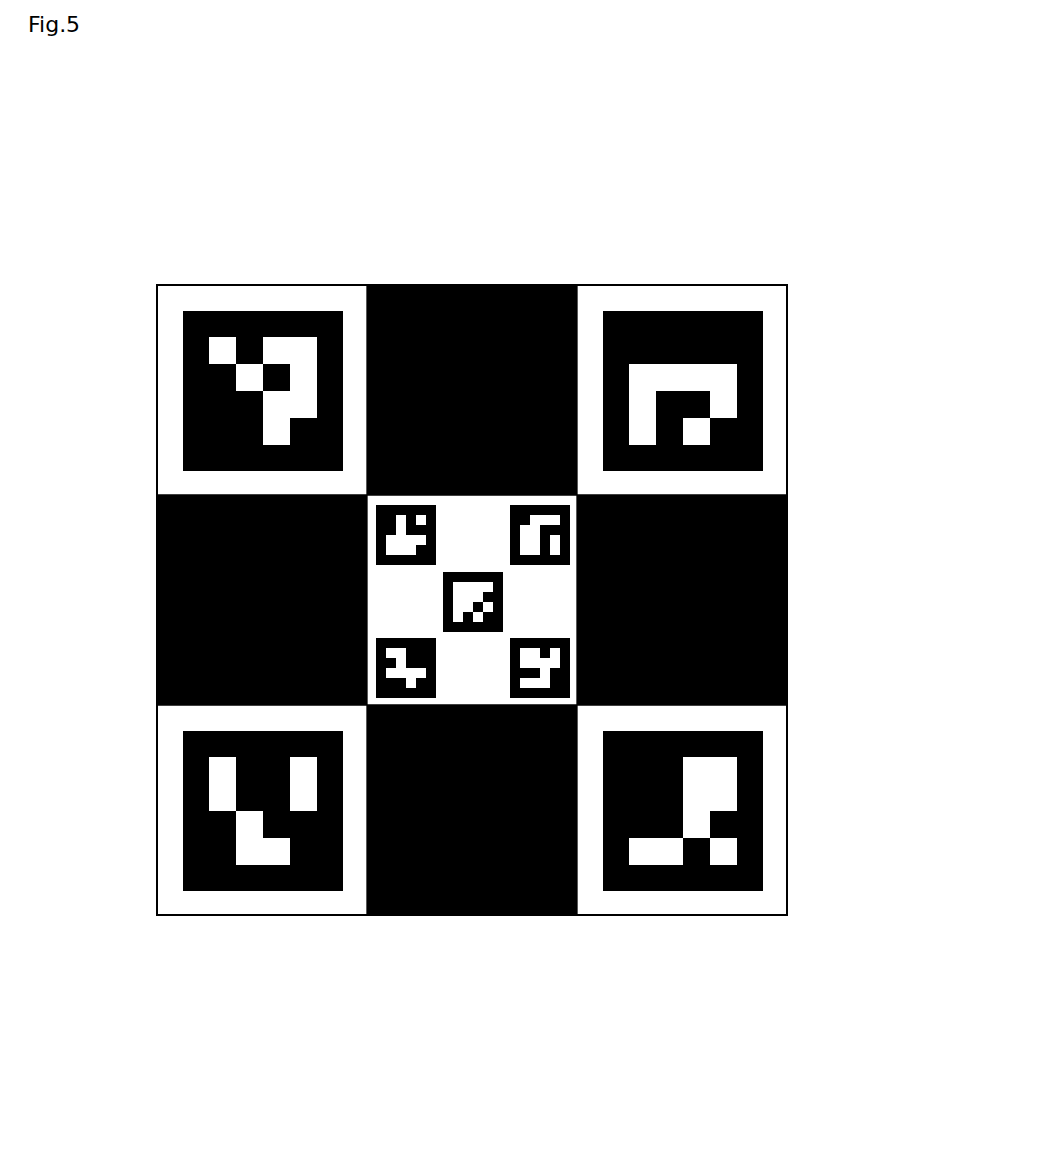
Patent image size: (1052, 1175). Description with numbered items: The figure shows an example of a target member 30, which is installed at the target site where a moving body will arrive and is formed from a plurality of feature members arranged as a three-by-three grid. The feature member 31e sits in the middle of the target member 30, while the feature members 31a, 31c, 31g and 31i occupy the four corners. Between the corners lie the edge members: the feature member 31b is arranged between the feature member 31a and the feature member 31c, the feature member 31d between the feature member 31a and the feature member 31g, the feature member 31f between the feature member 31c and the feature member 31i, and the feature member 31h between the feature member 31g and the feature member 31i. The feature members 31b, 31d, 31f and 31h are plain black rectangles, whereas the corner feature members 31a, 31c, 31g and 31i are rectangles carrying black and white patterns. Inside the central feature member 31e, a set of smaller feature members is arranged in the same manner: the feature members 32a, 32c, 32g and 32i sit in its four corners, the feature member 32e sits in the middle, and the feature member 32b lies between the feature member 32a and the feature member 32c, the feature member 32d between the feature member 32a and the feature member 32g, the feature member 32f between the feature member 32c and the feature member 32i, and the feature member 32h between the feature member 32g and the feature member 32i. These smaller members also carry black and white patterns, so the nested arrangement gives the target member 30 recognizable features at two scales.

The target member 30 is at (482, 141).
The feature member 31a is at (263, 285).
The feature member 31b is at (408, 285).
The feature member 31c is at (682, 285).
The feature member 31d is at (157, 625).
The feature member 31e is at (577, 573).
The feature member 31f is at (788, 528).
The feature member 31g is at (262, 915).
The feature member 31h is at (472, 915).
The feature member 31i is at (682, 915).
The feature member 32a is at (376, 520).
The feature member 32b is at (485, 496).
The feature member 32c is at (545, 505).
The feature member 32d is at (367, 588).
The feature member 32e is at (503, 600).
The feature member 32f is at (577, 600).
The feature member 32g is at (376, 660).
The feature member 32h is at (470, 706).
The feature member 32i is at (540, 698).